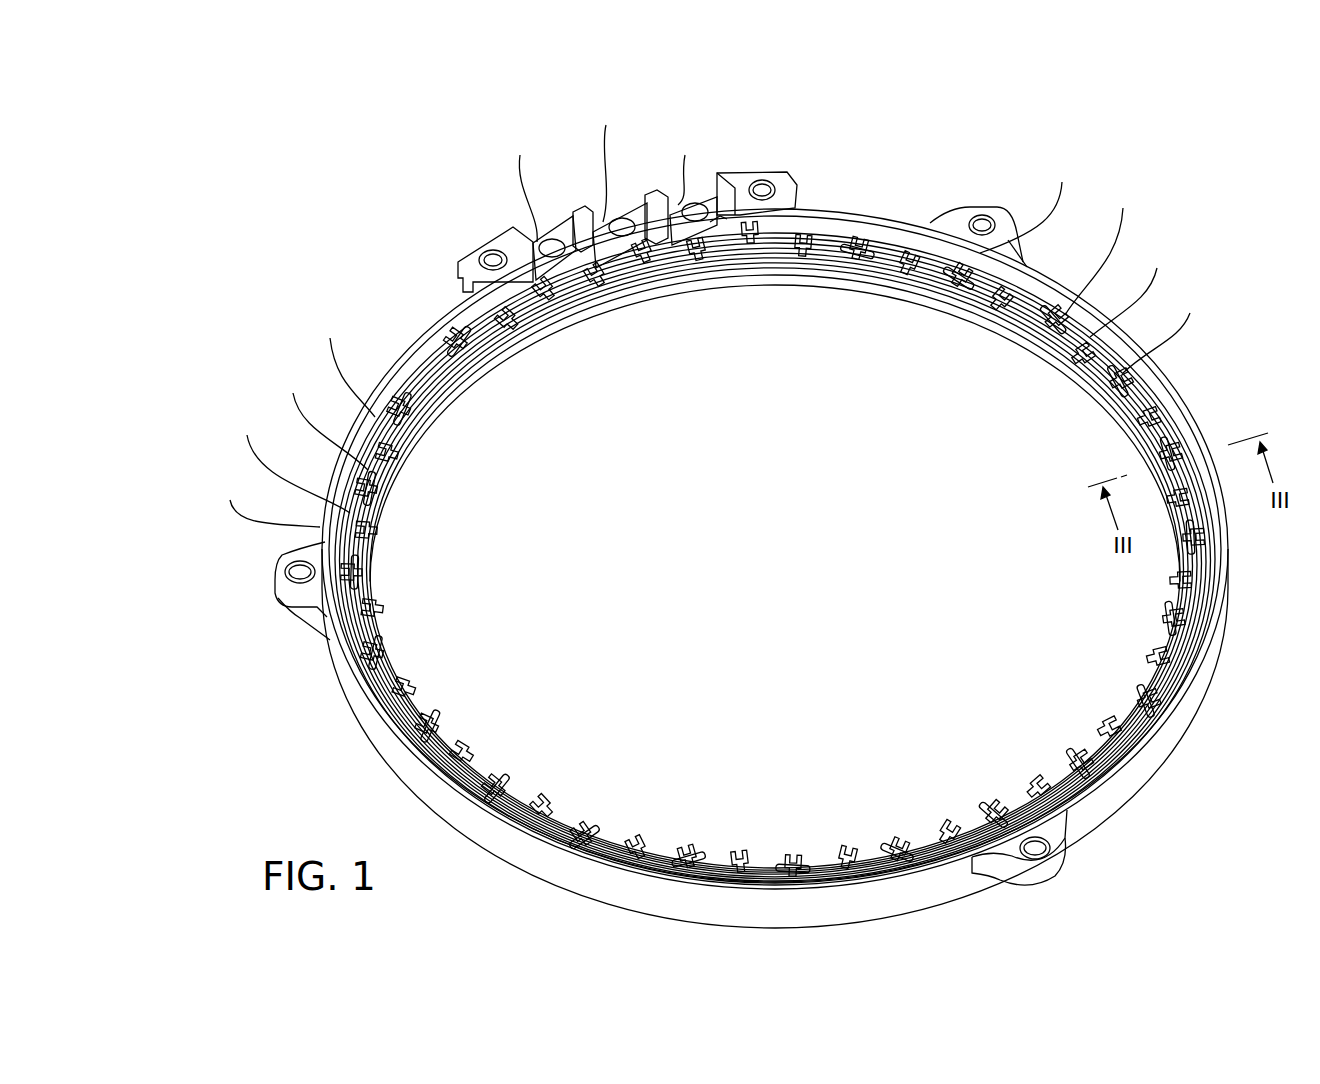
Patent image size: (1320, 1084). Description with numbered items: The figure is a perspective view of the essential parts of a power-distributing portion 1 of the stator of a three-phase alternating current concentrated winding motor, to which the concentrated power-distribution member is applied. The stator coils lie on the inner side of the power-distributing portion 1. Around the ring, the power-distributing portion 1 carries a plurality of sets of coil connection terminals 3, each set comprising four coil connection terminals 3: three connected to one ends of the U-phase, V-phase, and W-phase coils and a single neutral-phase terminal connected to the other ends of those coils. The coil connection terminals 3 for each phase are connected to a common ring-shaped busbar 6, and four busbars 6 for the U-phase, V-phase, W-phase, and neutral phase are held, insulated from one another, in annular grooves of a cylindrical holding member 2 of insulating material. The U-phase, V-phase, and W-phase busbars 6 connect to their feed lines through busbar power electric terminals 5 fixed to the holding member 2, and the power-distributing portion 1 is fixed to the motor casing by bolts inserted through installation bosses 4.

The power-distributing portion 1 is at (1112, 848).
The holding member 2 is at (1160, 750).
The coil connection terminals 3 is at (1082, 84).
The installation bosses 4 is at (295, 582).
The busbar power electric terminals 5 is at (470, 100).
The busbar 6 is at (133, 478).